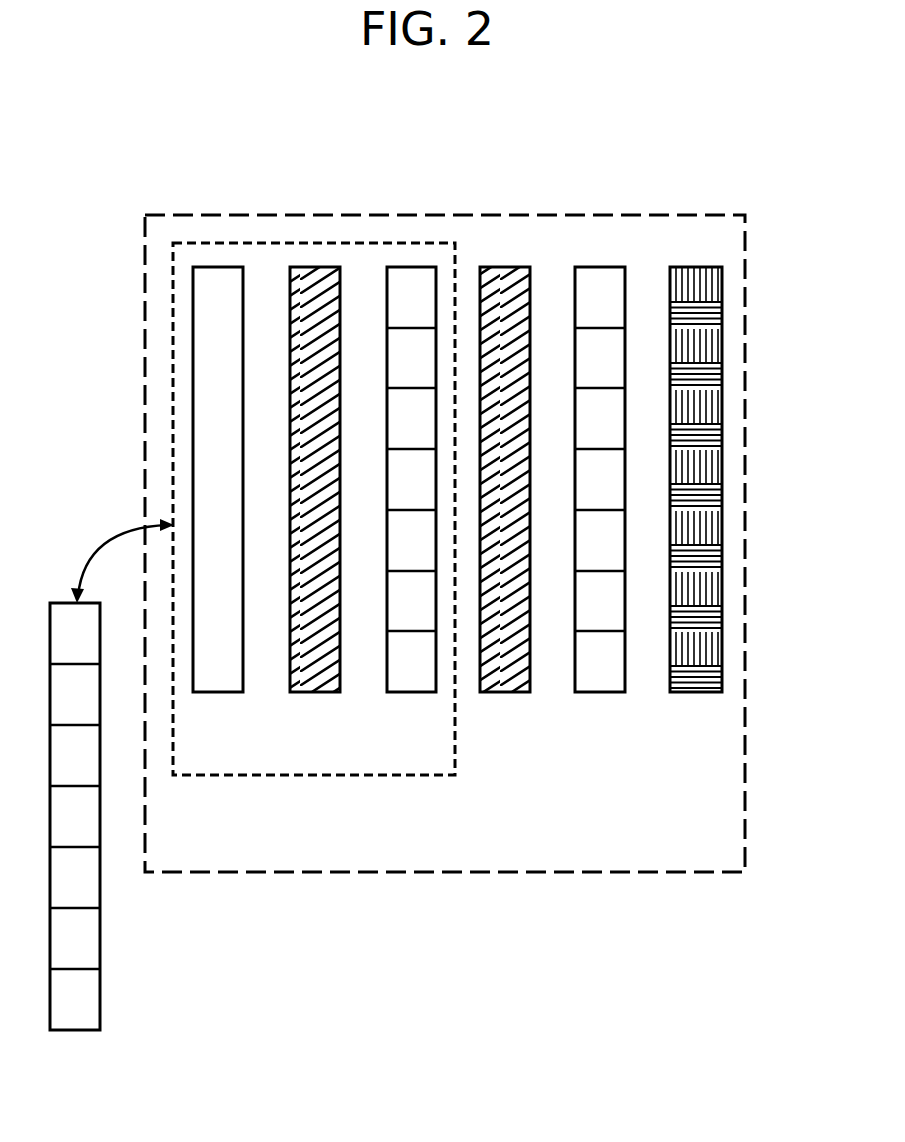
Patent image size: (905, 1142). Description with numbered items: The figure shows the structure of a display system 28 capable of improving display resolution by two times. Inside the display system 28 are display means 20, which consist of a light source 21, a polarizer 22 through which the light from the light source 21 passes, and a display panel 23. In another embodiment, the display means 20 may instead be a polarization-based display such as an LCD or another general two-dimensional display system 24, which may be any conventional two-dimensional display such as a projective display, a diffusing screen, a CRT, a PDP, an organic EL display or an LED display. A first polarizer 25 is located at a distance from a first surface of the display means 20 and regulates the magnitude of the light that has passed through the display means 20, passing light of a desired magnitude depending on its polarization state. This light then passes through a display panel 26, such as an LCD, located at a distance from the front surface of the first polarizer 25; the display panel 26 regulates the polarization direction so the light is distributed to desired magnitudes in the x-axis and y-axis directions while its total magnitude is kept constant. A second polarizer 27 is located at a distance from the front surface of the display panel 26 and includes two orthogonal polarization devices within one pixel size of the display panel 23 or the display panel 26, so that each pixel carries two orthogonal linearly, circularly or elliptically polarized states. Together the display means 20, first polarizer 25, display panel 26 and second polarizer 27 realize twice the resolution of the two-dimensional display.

The display means 20 is at (322, 775).
The light source 21 is at (220, 692).
The polarizer 22 is at (315, 692).
The display panel 23 is at (412, 692).
The two-dimensional display system 24 is at (75, 1030).
The first polarizer 25 is at (505, 692).
The display panel 26 is at (600, 692).
The second polarizer 27 is at (698, 692).
The display system 28 is at (745, 528).